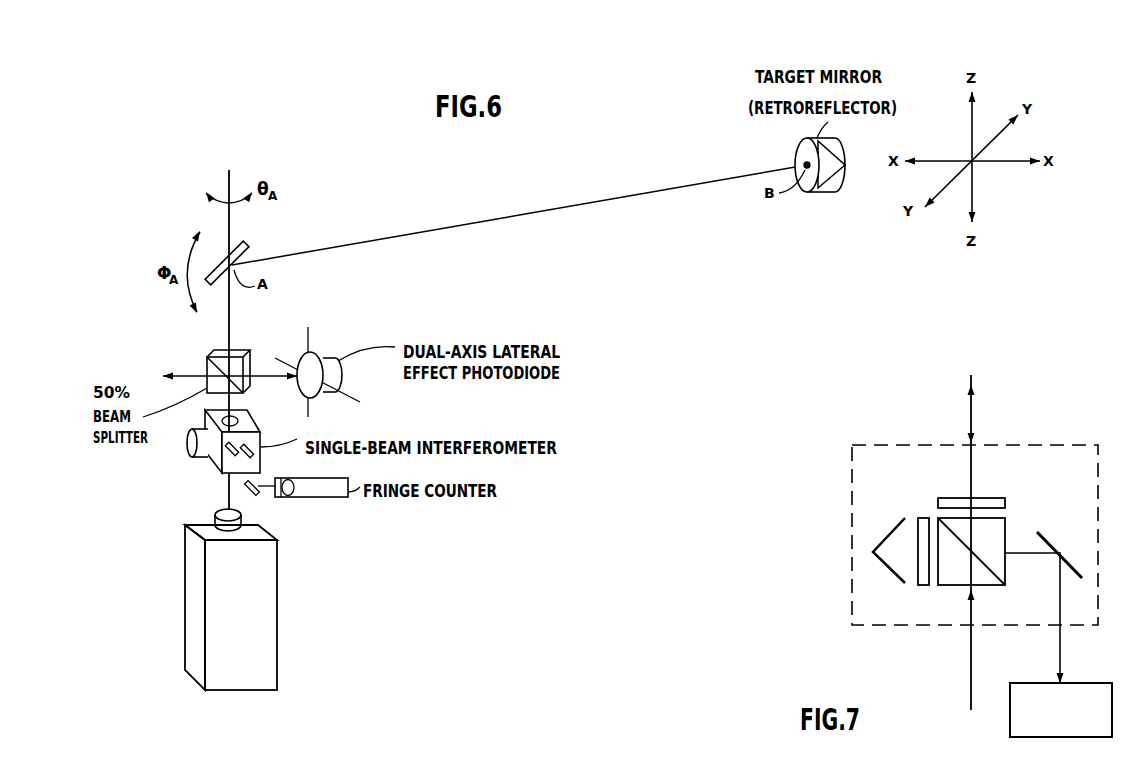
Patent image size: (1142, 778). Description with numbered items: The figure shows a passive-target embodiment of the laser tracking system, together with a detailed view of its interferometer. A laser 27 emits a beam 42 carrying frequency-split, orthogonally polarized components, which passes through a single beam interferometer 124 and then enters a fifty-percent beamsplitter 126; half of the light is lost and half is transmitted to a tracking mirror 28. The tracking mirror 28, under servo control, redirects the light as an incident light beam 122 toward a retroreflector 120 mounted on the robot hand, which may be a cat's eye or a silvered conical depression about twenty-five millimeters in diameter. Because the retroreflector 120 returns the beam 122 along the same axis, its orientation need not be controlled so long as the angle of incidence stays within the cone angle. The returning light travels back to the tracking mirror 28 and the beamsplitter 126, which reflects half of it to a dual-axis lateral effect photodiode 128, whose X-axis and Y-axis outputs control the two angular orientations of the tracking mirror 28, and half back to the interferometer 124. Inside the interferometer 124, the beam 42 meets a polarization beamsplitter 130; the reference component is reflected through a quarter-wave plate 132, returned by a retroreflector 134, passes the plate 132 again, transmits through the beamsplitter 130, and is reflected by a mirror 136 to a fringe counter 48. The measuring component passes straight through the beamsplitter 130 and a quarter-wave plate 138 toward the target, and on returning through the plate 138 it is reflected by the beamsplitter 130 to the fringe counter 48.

In FIG. 6, the laser 27 is at (277, 617).
In FIG. 6, the tracking mirror 28 is at (245, 245).
In FIG. 6, the beam 42 is at (228, 492).
In FIG. 7, the beam 42 is at (970, 680).
In FIG. 6, the fringe counter 48 is at (320, 498).
In FIG. 7, the fringe counter 48 is at (1077, 682).
In FIG. 6, the retroreflector 120 is at (829, 198).
In FIG. 6, the incident light beam 122 is at (515, 213).
In FIG. 6, the single beam interferometer 124 is at (210, 467).
In FIG. 7, the single beam interferometer 124 is at (890, 444).
In FIG. 6, the 50% beamsplitter 126 is at (215, 353).
In FIG. 6, the dual-axis lateral effect photodiode 128 is at (327, 355).
In FIG. 7, the polarization beamsplitter 130 is at (1005, 523).
In FIG. 7, the quarter-wave plate 132 is at (923, 517).
In FIG. 7, the retroreflector 134 is at (887, 567).
In FIG. 7, the mirror 136 is at (1073, 564).
In FIG. 7, the quarter-wave plate 138 is at (990, 497).